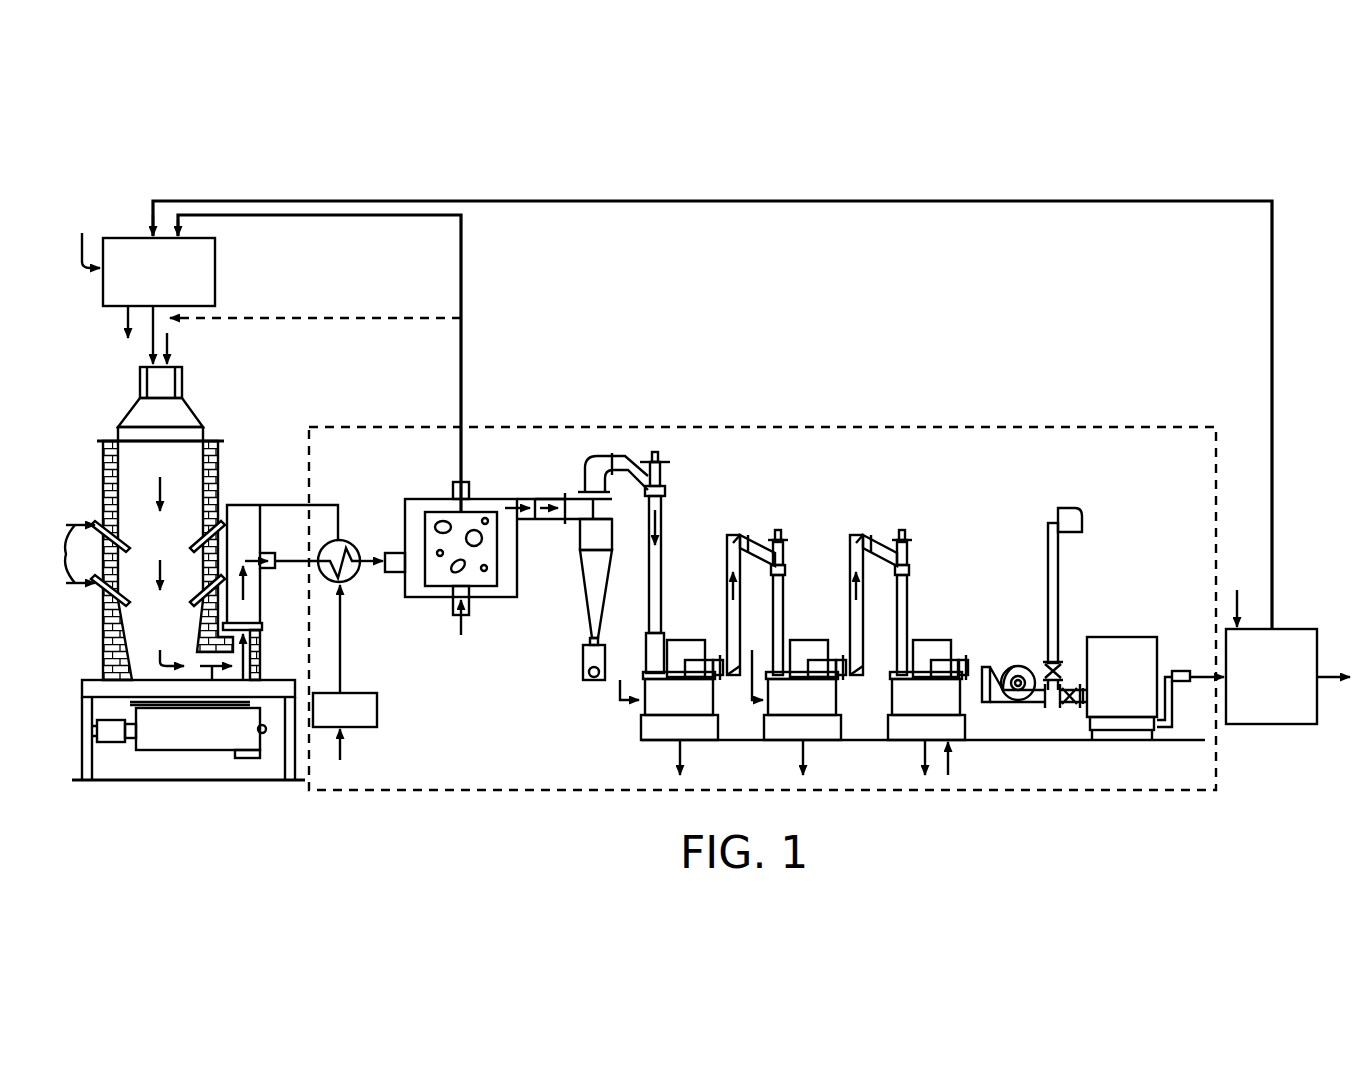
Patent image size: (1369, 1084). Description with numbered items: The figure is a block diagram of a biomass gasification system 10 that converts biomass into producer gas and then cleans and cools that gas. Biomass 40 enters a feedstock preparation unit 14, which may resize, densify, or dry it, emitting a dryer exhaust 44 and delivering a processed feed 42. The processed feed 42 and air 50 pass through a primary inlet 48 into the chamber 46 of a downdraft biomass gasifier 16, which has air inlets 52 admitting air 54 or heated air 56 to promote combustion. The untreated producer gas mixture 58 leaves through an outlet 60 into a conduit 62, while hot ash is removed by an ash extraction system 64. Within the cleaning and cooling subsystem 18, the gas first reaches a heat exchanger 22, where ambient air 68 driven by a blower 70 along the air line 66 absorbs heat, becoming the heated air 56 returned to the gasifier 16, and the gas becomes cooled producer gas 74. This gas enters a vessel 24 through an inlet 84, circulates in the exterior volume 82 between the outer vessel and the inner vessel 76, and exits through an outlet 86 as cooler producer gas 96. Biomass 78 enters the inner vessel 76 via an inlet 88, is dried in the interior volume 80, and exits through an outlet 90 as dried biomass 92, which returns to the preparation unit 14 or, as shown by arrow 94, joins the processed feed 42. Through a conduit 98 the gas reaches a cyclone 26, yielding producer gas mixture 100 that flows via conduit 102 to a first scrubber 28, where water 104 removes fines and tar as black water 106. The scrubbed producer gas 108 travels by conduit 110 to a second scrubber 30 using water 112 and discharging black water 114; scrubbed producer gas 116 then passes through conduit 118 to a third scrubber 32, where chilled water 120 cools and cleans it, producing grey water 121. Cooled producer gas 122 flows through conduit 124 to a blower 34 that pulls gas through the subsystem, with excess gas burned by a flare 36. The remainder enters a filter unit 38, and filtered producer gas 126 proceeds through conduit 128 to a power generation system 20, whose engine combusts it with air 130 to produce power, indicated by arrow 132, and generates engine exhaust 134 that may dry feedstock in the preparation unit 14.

The biomass gasification system 10 is at (890, 178).
The feedstock preparation unit 14 is at (132, 237).
The biomass gasifier 16 is at (188, 589).
The cleaning and cooling subsystem 18 is at (882, 426).
The power generation system 20 is at (1270, 724).
The heat exchanger 22 is at (350, 547).
The vessel 24 is at (447, 537).
The cyclone 26 is at (612, 528).
The first scrubber 28 is at (714, 700).
The second scrubber 30 is at (837, 700).
The third scrubber 32 is at (962, 700).
The blower 34 is at (1022, 665).
The flare 36 is at (1084, 516).
The filter unit 38 is at (1120, 637).
The biomass 40 is at (84, 237).
The processed feed 42 is at (150, 342).
The dryer exhaust 44 is at (126, 318).
The chamber 46 is at (140, 461).
The primary inlet 48 is at (184, 385).
The air 50 is at (172, 345).
The air inlets 52 is at (100, 524).
The air 54 is at (85, 554).
The heated air 56 is at (238, 516).
The untreated producer gas mixture 58 is at (240, 650).
The outlet 60 is at (262, 650).
The conduit 62 is at (266, 569).
The ash extraction system 64 is at (162, 765).
The air line 66 is at (336, 588).
The ambient air 68 is at (342, 660).
The blower 70 is at (380, 712).
The cooled producer gas 74 is at (348, 578).
The inner vessel 76 is at (486, 498).
The biomass 78 is at (460, 572).
The interior volume 80 is at (463, 520).
The exterior volume 82 is at (416, 518).
The inlet 84 is at (385, 575).
The outlet 86 is at (525, 498).
The inlet 88 is at (478, 608).
The outlet 90 is at (478, 512).
The dried biomass 92 is at (463, 352).
The arrow 94 is at (312, 318).
The cooler producer gas 96 is at (541, 520).
The conduit 98 is at (557, 498).
The producer gas mixture 100 is at (661, 528).
The conduit 102 is at (664, 606).
The water 104 is at (618, 696).
The black water 106 is at (668, 760).
The scrubbed producer gas 108 is at (783, 604).
The conduit 110 is at (726, 590).
The water 112 is at (765, 661).
The black water 114 is at (792, 760).
The scrubbed producer gas 116 is at (849, 590).
The conduit 118 is at (858, 548).
The chilled water 120 is at (950, 778).
The grey water 121 is at (920, 760).
The cooled producer gas 122 is at (960, 666).
The conduit 124 is at (980, 668).
The filtered producer gas 126 is at (1173, 703).
The conduit 128 is at (1180, 668).
The air 130 is at (1250, 590).
The arrow 132 is at (1324, 686).
The engine exhaust 134 is at (1273, 406).